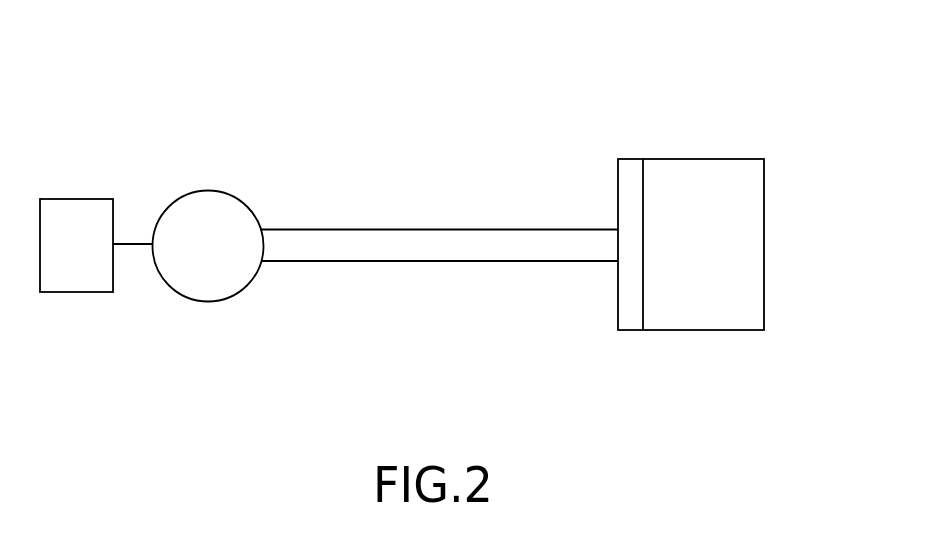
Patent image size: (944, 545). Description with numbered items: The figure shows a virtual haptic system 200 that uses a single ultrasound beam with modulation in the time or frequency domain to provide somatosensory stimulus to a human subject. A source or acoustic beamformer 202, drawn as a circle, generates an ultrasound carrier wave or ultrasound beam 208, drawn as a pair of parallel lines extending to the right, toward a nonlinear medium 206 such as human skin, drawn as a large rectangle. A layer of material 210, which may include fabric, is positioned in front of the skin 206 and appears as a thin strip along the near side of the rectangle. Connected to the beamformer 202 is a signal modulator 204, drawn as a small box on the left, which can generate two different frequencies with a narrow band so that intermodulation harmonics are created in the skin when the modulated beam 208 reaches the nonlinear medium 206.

The virtual haptic system 200 is at (739, 118).
The acoustic beamformer 202 is at (238, 271).
The signal modulator 204 is at (91, 212).
The nonlinear medium 206 is at (718, 305).
The ultrasound beam 208 is at (385, 243).
The layer of material 210 is at (632, 318).